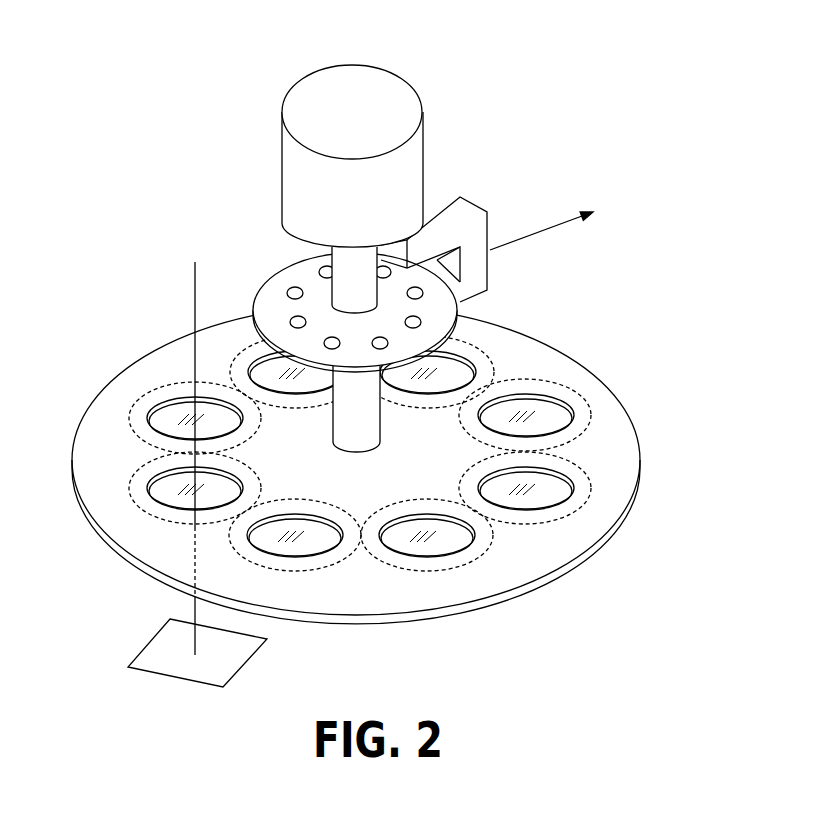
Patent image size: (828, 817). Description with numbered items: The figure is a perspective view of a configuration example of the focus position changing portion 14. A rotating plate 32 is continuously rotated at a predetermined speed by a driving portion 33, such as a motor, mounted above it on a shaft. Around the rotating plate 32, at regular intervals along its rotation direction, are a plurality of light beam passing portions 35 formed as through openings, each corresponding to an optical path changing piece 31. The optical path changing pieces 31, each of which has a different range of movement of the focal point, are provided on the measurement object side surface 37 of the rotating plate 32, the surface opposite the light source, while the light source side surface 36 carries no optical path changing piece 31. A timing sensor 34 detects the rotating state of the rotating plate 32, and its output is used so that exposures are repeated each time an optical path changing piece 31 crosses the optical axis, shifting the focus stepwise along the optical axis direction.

The focus position changing portion 14 is at (459, 77).
The optical path changing piece 31 is at (587, 473).
The rotating plate 32 is at (386, 480).
The driving portion 33 is at (412, 173).
The timing sensor 34 is at (430, 325).
The light beam passing portion 35 is at (305, 543).
The light source side surface 36 is at (530, 560).
The measurement object side surface 37 is at (530, 593).